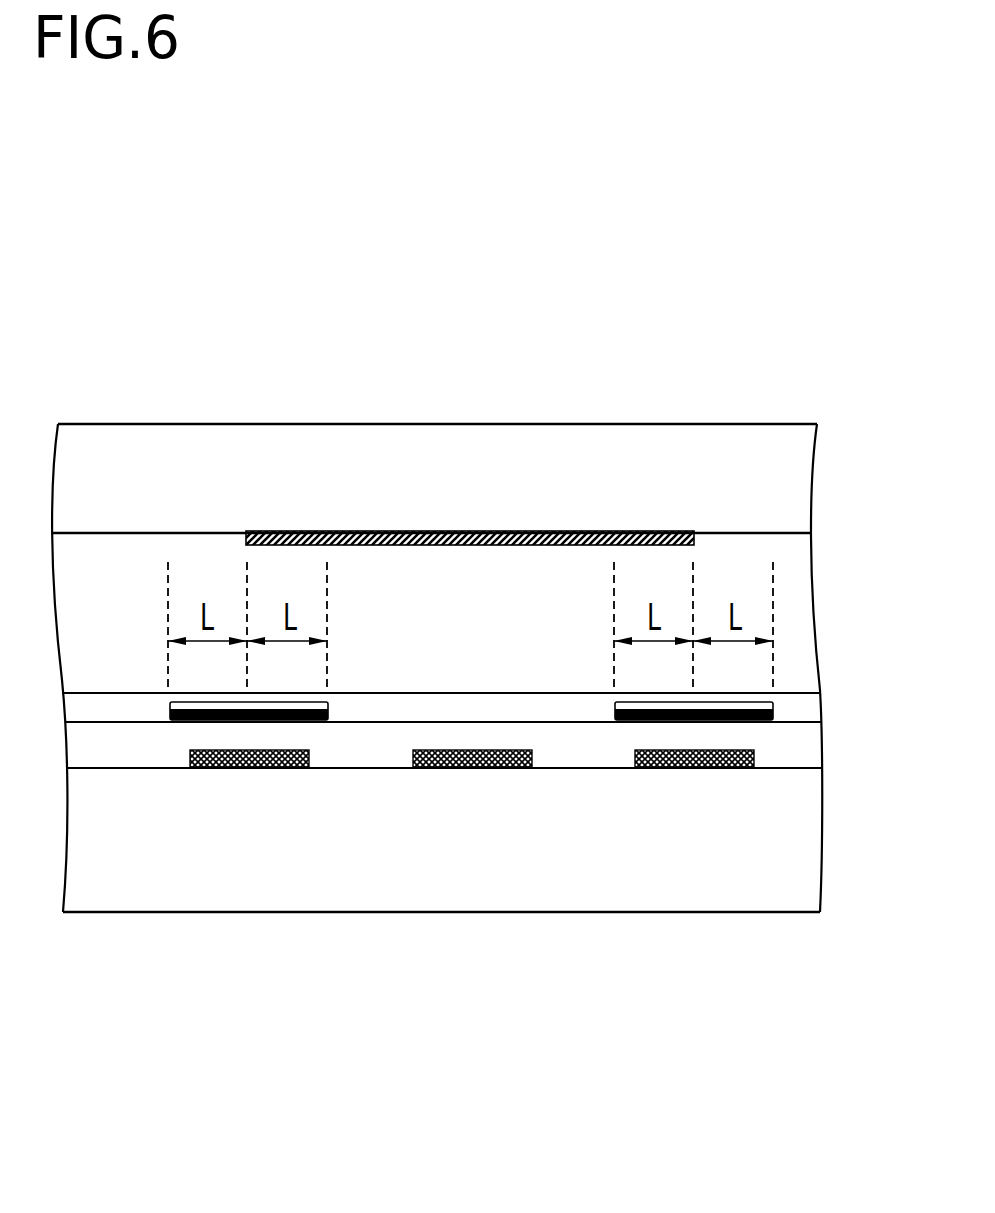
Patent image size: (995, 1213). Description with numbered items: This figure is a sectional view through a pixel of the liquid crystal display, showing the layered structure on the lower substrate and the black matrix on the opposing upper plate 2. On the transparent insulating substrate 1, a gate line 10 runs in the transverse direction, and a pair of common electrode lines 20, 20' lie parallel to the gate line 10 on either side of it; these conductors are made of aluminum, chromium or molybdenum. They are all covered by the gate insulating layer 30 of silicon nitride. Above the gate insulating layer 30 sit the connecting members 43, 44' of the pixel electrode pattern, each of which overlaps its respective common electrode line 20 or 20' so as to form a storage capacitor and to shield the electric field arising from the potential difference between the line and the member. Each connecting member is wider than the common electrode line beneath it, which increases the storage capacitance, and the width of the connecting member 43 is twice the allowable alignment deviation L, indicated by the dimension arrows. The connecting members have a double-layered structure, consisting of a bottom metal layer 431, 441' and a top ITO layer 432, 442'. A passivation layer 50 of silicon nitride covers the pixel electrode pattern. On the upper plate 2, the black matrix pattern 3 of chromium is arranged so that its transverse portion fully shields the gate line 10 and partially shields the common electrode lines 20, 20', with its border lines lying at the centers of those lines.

The transparent insulating substrate 1 is at (807, 844).
The upper substrate 2 is at (348, 441).
The black matrix pattern 3 is at (490, 531).
The gate line 10 is at (467, 768).
The common electrode line 20 is at (280, 863).
The common electrode line 20' is at (732, 863).
The gate insulating layer 30 is at (807, 751).
The connecting member 43 is at (249, 878).
The bottom metal layer 431 is at (201, 722).
The top ITO layer 432 is at (267, 705).
The connecting member 44' is at (687, 876).
The bottom metal layer 441' is at (687, 847).
The top ITO layer 442' is at (694, 843).
The passivation layer 50 is at (807, 703).